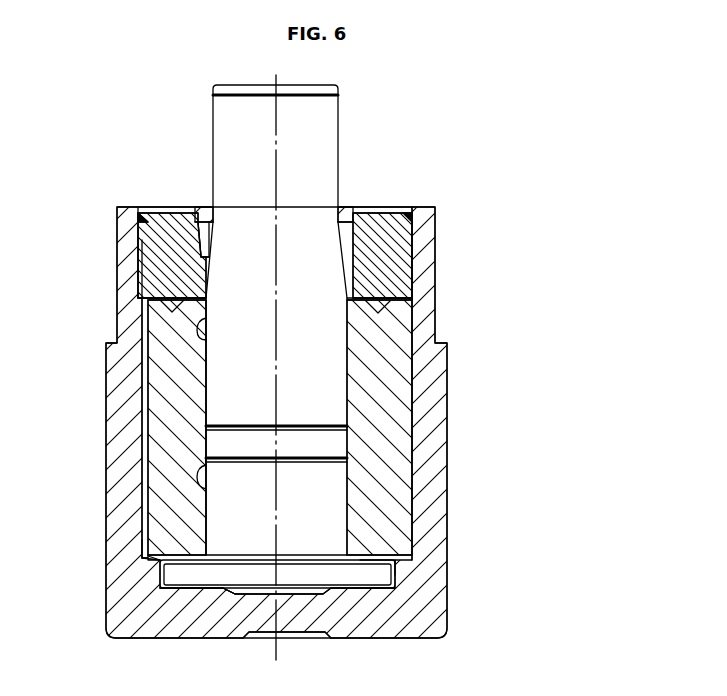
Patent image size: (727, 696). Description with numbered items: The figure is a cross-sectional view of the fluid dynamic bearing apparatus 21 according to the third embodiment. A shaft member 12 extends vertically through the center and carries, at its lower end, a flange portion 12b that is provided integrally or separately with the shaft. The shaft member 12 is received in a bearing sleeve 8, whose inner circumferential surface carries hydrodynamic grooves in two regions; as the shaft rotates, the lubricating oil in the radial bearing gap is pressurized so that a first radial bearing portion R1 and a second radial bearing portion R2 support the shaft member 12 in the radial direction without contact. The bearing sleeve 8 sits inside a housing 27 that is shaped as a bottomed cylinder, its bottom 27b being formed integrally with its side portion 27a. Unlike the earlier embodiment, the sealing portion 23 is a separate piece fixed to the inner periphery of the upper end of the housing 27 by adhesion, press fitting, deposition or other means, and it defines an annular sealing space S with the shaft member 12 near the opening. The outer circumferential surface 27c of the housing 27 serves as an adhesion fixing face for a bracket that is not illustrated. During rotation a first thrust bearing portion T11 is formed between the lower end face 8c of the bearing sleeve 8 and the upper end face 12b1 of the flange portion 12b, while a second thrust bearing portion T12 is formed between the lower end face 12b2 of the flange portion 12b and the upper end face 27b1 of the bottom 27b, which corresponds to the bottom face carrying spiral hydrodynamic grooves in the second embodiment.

The fluid dynamic bearing apparatus 21 is at (549, 222).
The shaft member 12 is at (343, 153).
The flange portion 12b is at (386, 575).
The upper end face of the flange portion 12b1 is at (374, 553).
The lower end face of the flange portion 12b2 is at (374, 590).
The sealing portion 23 is at (153, 250).
The bearing sleeve 8 is at (414, 333).
The lower end face of the bearing sleeve 8c is at (157, 577).
The housing 27 is at (408, 643).
The side portion of the housing 27a is at (122, 433).
The bottom of the housing 27b is at (322, 622).
The recess in housing bottom 27b1 is at (228, 593).
The outer circumferential surface of the housing 27c is at (448, 478).
The sealing space S is at (204, 250).
The first radial bearing portion R1 is at (190, 367).
The second radial bearing portion R2 is at (183, 505).
The first thrust bearing portion T11 is at (177, 557).
The second thrust bearing portion T12 is at (197, 592).